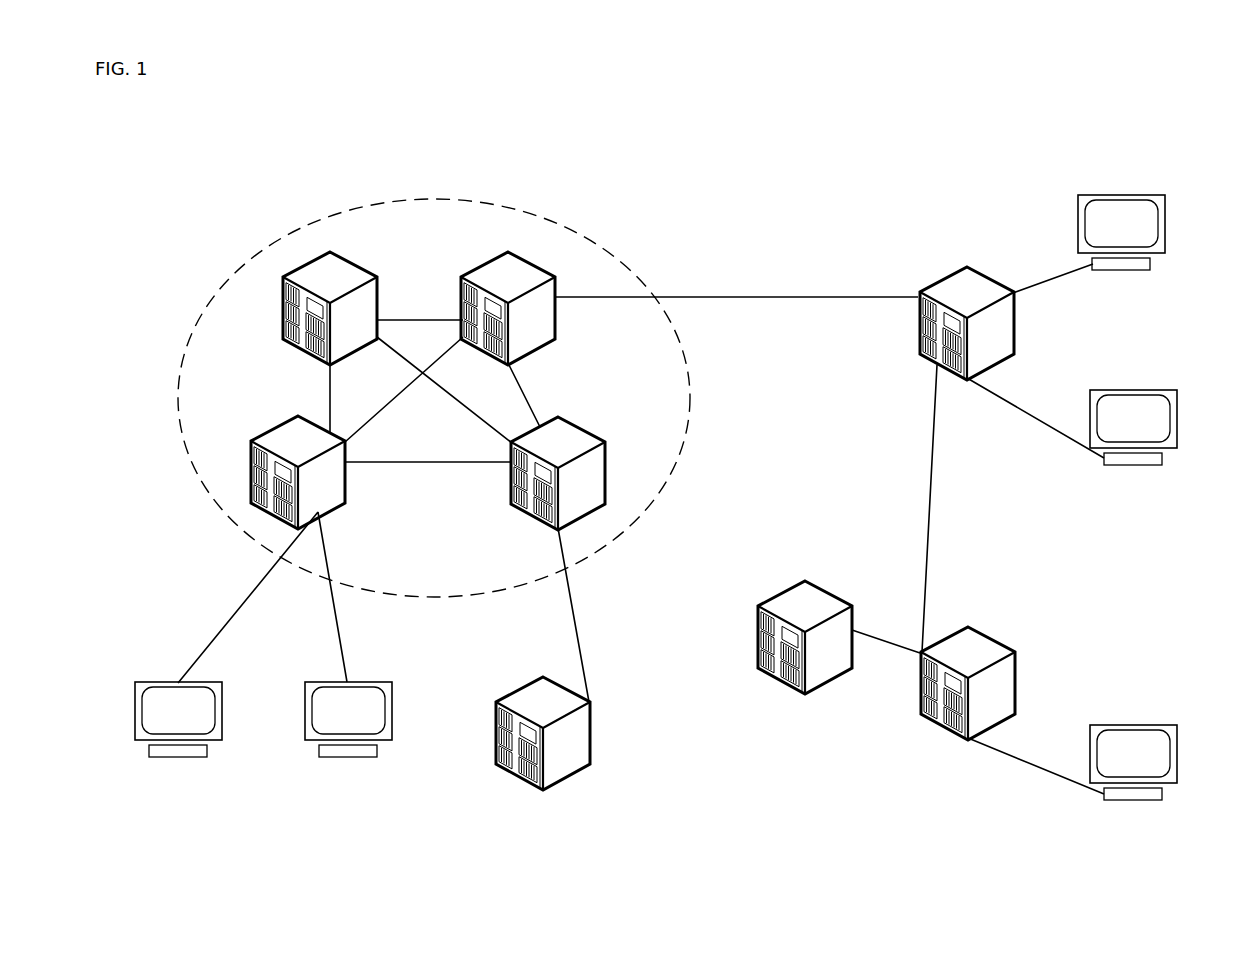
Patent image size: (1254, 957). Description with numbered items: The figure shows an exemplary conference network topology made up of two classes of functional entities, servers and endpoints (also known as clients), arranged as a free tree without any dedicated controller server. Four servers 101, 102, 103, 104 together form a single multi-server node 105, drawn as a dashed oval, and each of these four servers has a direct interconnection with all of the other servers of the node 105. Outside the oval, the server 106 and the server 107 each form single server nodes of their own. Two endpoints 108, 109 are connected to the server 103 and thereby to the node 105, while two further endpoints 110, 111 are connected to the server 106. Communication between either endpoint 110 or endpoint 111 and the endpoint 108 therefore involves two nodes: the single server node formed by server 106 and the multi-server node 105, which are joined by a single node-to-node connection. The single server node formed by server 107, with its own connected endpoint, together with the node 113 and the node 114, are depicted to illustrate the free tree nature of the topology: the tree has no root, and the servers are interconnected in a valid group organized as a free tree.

The server 101 is at (282, 330).
The server 102 is at (465, 273).
The server 103 is at (287, 410).
The server 104 is at (592, 432).
The node 105 is at (372, 200).
The server 106 is at (968, 262).
The server 107 is at (970, 625).
The endpoint 108 is at (169, 758).
The endpoint 109 is at (340, 758).
The endpoint 110 is at (1165, 225).
The endpoint 111 is at (1175, 420).
The node 113 is at (806, 580).
The node 114 is at (543, 792).